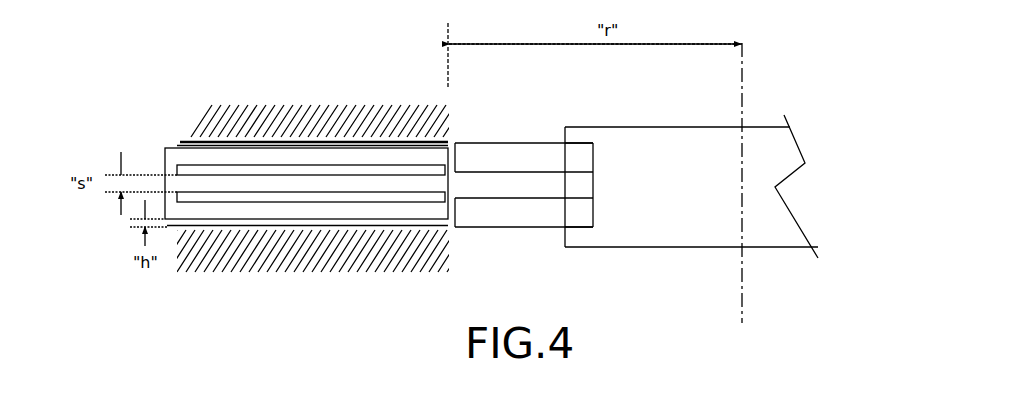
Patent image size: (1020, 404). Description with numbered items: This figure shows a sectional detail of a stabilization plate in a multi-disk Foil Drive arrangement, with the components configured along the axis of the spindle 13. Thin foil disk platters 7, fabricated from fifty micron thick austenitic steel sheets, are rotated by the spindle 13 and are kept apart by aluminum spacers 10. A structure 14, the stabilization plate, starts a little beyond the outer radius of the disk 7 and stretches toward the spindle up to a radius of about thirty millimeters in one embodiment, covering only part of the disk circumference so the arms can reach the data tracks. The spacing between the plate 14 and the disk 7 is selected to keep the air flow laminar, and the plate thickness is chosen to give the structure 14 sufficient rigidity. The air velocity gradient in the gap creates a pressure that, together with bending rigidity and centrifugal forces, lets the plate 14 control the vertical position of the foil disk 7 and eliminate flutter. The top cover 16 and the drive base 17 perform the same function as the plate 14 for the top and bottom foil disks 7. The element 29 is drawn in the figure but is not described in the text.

The conductor strips 7 is at (457, 147).
The conductor end portions 10 is at (578, 162).
The cable axis / distal part 13 is at (742, 240).
The slotted plate 14 is at (176, 159).
The upper dielectric block 16 is at (333, 119).
The lower dielectric block 17 is at (265, 253).
The connector body 29 is at (591, 127).